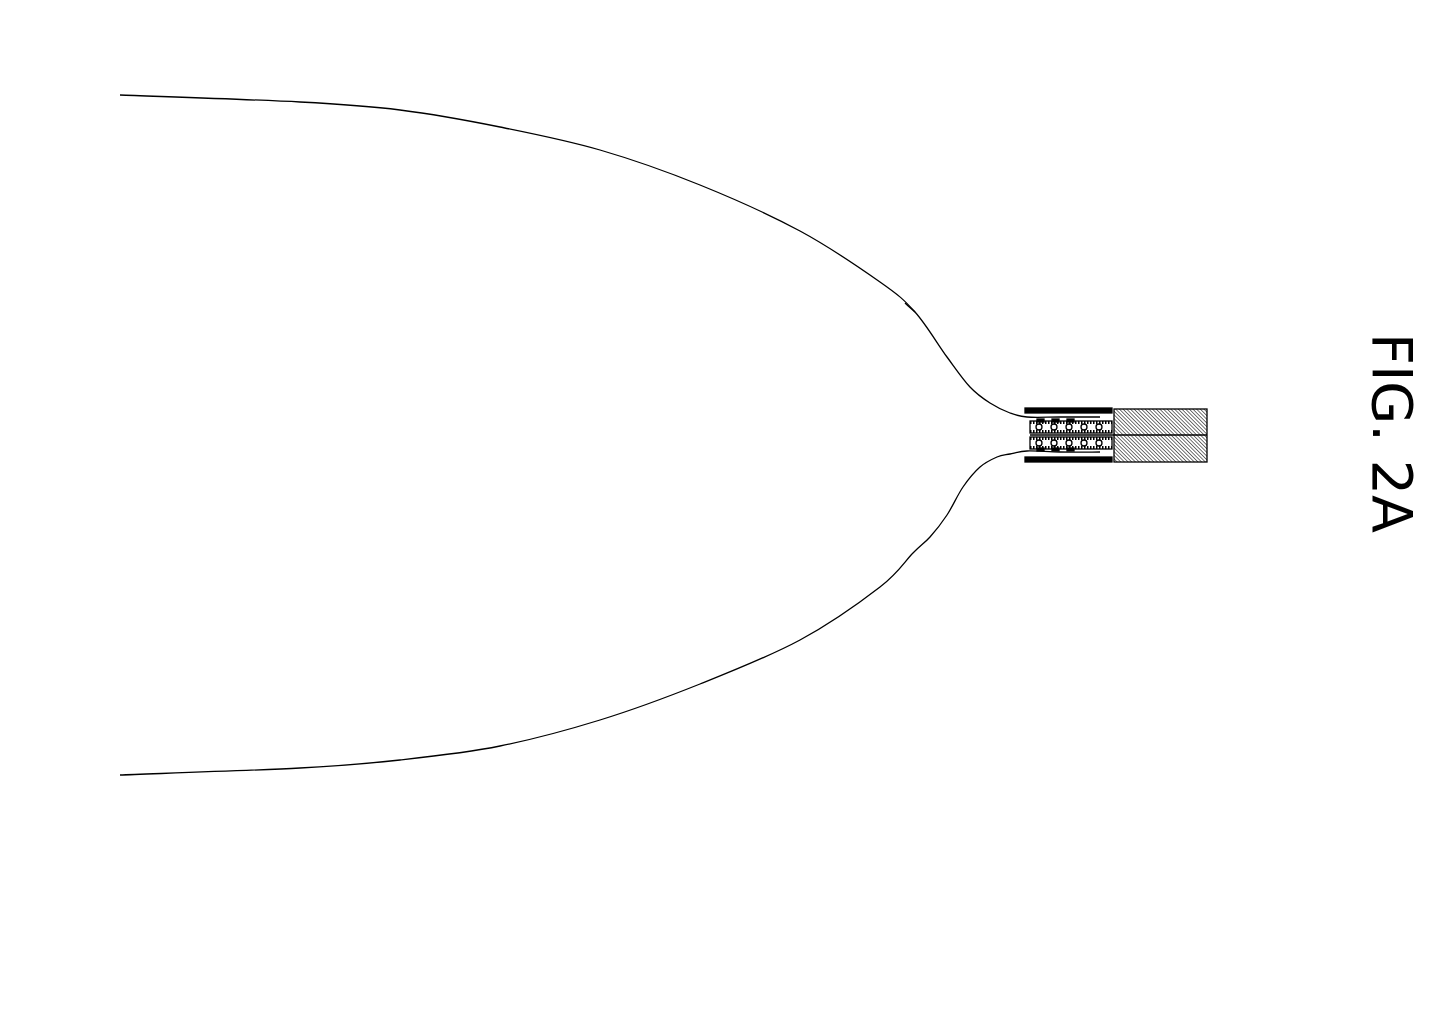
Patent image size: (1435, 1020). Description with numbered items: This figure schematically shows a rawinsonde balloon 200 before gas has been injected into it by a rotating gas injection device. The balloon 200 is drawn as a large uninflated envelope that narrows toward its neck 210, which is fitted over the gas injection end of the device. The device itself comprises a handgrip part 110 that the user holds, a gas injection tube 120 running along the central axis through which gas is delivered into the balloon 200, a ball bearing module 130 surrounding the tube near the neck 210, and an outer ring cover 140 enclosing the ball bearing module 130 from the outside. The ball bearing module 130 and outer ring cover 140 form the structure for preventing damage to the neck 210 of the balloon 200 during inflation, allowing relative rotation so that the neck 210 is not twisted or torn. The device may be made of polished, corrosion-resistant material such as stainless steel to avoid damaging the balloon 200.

The rawinsonde balloon 200 is at (859, 212).
The neck 210 is at (915, 312).
The outer ring cover 140 is at (1075, 392).
The ball bearing module 130 is at (1024, 433).
The handgrip part 110 is at (1160, 409).
The gas injection tube 120 is at (1210, 435).